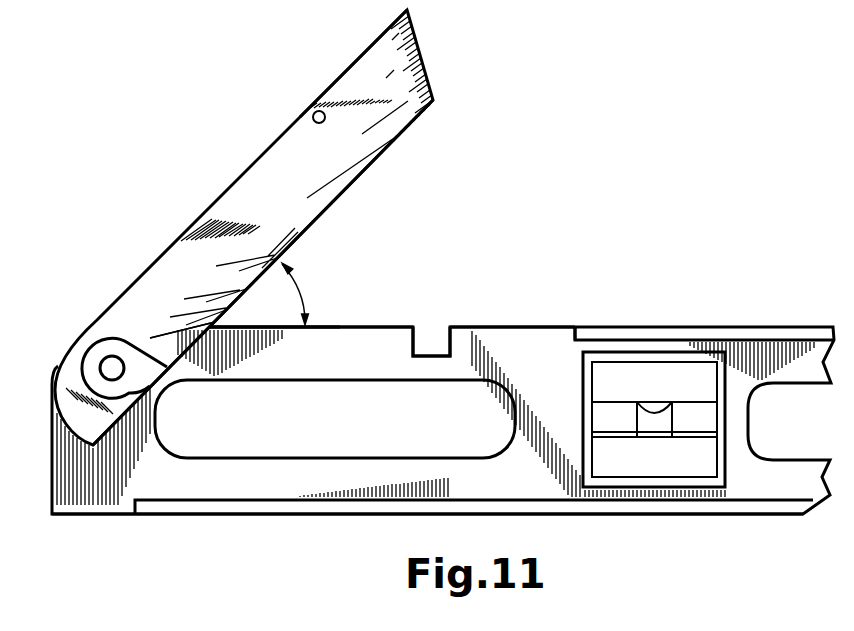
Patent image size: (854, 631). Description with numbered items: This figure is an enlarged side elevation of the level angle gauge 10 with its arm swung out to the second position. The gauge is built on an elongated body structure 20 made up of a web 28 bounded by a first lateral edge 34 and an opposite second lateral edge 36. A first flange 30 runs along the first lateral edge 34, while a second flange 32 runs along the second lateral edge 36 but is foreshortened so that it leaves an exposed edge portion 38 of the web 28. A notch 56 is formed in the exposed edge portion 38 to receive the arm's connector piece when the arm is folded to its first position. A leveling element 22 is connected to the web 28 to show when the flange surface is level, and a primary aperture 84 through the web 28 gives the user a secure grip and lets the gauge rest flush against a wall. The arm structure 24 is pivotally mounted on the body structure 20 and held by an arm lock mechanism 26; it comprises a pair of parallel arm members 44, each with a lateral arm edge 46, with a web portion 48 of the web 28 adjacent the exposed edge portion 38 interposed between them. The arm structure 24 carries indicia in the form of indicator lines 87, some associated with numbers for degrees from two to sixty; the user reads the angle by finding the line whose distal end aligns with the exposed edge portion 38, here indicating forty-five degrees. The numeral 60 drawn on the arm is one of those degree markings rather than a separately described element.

The level angle gauge 10 is at (553, 254).
The elongated body structure 20 is at (115, 510).
The leveling element 22 is at (606, 425).
The arm structure 24 is at (272, 130).
The arm lock mechanism 26 is at (97, 349).
The web 28 is at (362, 337).
The first flange 30 is at (640, 510).
The second flange 32 is at (653, 332).
The first lateral edge 34 is at (468, 500).
The second lateral edge 36 is at (575, 343).
The exposed edge portion 38 is at (322, 325).
The arm member 44 is at (217, 203).
The lateral arm edge 46 is at (337, 79).
The web portion 48 is at (513, 335).
The notch 56 is at (436, 337).
The angle indicia 60 is at (171, 333).
The primary aperture 84 is at (343, 436).
The indicator line 87 is at (408, 137).